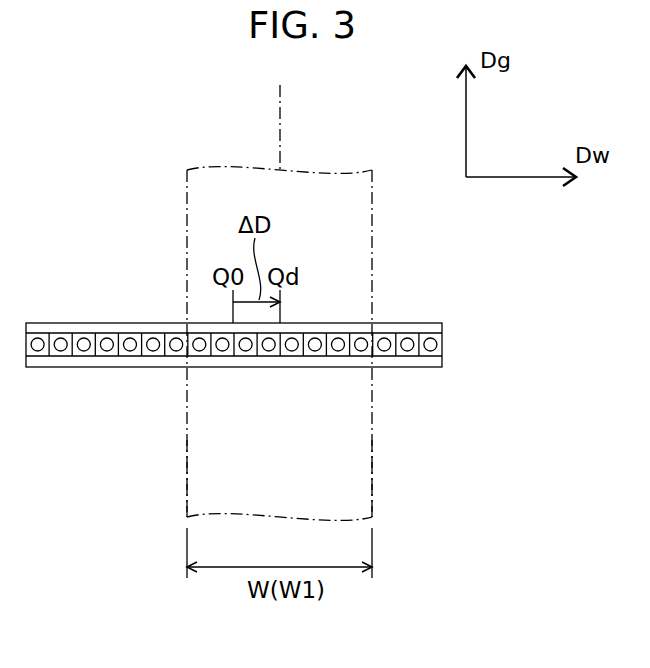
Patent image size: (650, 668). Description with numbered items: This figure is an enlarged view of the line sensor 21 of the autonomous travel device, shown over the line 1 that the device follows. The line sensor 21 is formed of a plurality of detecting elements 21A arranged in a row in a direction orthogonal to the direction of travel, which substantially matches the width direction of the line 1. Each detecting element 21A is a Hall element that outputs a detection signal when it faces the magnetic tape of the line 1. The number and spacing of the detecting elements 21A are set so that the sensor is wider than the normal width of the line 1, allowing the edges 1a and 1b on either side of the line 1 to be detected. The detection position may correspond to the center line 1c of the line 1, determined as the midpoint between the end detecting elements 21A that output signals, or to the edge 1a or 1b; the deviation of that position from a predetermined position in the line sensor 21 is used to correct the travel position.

The line 1 is at (372, 213).
The edge of the line 1a is at (375, 484).
The edge of the line 1b is at (184, 483).
The center line of the line 1c is at (280, 108).
The line sensor 21 is at (51, 322).
The detecting elements 21A is at (37, 350).